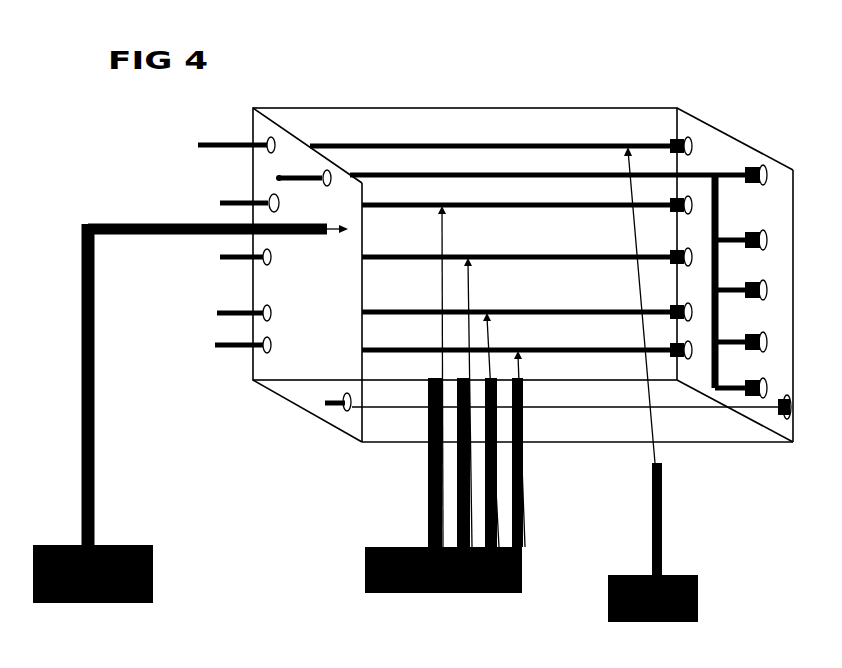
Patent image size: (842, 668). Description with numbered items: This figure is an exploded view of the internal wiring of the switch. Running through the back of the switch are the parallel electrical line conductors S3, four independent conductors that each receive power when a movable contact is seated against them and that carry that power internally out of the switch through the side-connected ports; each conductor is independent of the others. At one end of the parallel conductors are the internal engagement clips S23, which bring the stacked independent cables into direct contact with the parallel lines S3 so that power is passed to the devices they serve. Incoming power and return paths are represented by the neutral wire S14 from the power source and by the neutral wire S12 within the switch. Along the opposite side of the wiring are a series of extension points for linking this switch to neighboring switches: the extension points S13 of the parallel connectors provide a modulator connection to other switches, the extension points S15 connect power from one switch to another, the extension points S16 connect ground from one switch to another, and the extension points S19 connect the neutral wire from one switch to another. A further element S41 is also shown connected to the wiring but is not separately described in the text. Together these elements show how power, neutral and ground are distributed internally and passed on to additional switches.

The parallel electrical line conductors S3 is at (527, 394).
The neutral wire S12 is at (779, 406).
The extension points for modulator connection to other switches S13 is at (220, 203).
The neutral wire from power source S14 is at (504, 379).
The extension points for connecting power S15 is at (198, 145).
The extension points for connecting ground S16 is at (346, 412).
The extension points for connecting neutral wire S19 is at (302, 178).
The internal engagement clips S23 is at (758, 167).
The main supply rod S41 is at (190, 413).